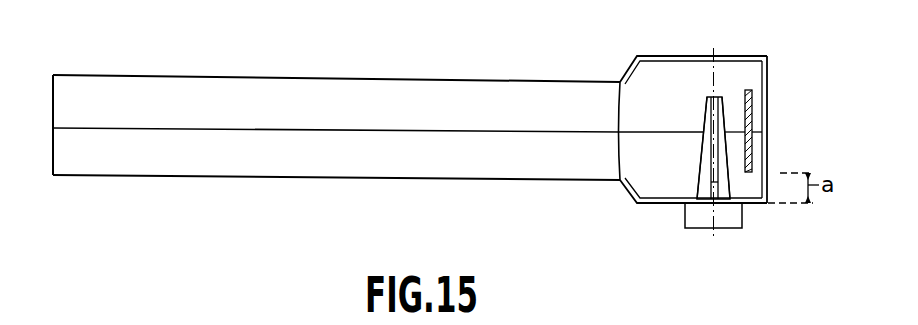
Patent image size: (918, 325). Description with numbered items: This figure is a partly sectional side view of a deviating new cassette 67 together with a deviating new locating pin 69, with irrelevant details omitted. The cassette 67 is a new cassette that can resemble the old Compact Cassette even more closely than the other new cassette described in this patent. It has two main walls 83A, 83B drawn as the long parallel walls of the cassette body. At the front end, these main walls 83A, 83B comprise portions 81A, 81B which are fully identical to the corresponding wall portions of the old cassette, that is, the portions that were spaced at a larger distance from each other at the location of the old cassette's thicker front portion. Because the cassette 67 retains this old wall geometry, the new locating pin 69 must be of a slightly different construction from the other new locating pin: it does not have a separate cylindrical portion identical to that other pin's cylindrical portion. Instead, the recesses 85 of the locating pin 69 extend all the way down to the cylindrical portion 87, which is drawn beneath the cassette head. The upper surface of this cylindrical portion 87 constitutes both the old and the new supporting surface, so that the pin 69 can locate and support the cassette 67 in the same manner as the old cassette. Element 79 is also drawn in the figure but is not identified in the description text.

The new cassette 67 is at (239, 64).
The main wall 83A is at (358, 76).
The main wall 83B is at (360, 180).
The portion of main wall 81A is at (672, 56).
The portion of main wall 81B is at (664, 205).
The hatched pin / electrode 79 is at (752, 108).
The new locating pin 69 is at (727, 148).
The recesses 85 is at (702, 168).
The cylindrical portion 87 is at (735, 216).